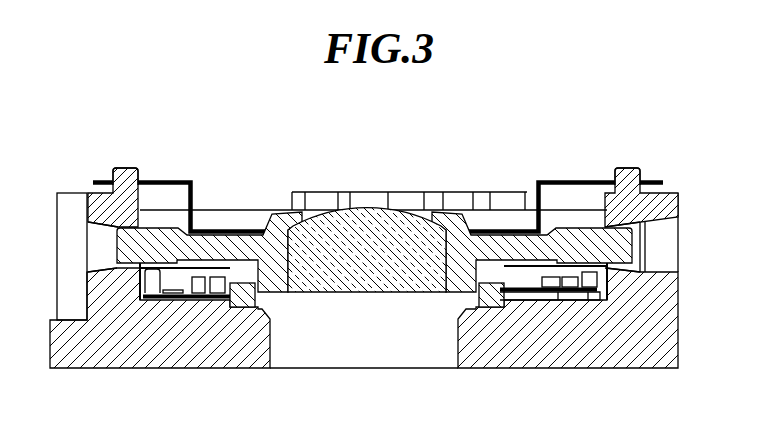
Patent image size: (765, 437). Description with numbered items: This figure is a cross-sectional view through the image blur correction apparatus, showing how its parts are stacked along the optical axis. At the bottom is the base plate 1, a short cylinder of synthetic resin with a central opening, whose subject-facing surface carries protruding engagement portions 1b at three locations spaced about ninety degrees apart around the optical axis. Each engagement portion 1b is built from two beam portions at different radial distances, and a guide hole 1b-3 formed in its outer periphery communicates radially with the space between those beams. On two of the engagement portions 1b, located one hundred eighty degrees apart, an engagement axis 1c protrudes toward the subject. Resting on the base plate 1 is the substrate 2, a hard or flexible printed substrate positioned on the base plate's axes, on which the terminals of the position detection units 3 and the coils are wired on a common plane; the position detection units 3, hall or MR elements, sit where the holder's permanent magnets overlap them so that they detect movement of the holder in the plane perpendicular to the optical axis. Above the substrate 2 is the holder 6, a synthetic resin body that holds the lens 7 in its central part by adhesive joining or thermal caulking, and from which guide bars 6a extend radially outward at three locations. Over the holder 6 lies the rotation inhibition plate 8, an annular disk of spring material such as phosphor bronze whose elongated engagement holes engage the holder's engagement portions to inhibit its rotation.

The base plate 1 is at (500, 364).
The engagement portion 1b is at (92, 212).
The guide hole 1b-3 is at (98, 225).
The engagement axis 1c is at (126, 170).
The substrate 2 is at (176, 300).
The position detection unit 3 is at (196, 296).
The holder 6 is at (374, 215).
The guide bar 6a is at (156, 240).
The lens 7 is at (343, 216).
The rotation inhibition plate 8 is at (537, 180).